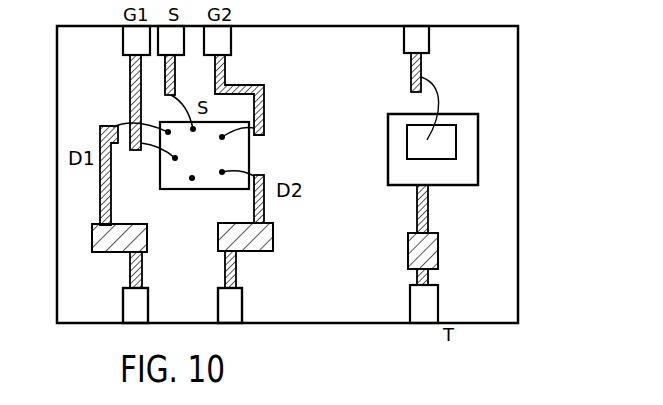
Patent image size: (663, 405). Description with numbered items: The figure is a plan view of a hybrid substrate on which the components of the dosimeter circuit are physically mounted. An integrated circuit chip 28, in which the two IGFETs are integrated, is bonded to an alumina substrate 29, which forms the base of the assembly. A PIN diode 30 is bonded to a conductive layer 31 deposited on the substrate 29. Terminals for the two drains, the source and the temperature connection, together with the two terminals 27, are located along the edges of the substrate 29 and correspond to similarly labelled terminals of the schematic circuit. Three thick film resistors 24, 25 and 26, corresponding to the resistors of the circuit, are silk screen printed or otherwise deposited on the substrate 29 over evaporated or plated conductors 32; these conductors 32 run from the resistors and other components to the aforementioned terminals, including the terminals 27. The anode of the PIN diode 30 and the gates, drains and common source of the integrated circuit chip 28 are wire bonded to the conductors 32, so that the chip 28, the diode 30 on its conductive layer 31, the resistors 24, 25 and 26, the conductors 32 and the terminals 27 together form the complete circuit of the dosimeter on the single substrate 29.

The thick film resistor 24 is at (440, 250).
The thick film resistor 25 is at (104, 253).
The thick film resistor 26 is at (258, 240).
The terminal 27 is at (222, 308).
The integrated circuit chip 28 is at (192, 180).
The alumina substrate 29 is at (505, 96).
The PIN diode 30 is at (447, 135).
The conductive layer 31 is at (468, 168).
The plated conductors 32 is at (131, 73).